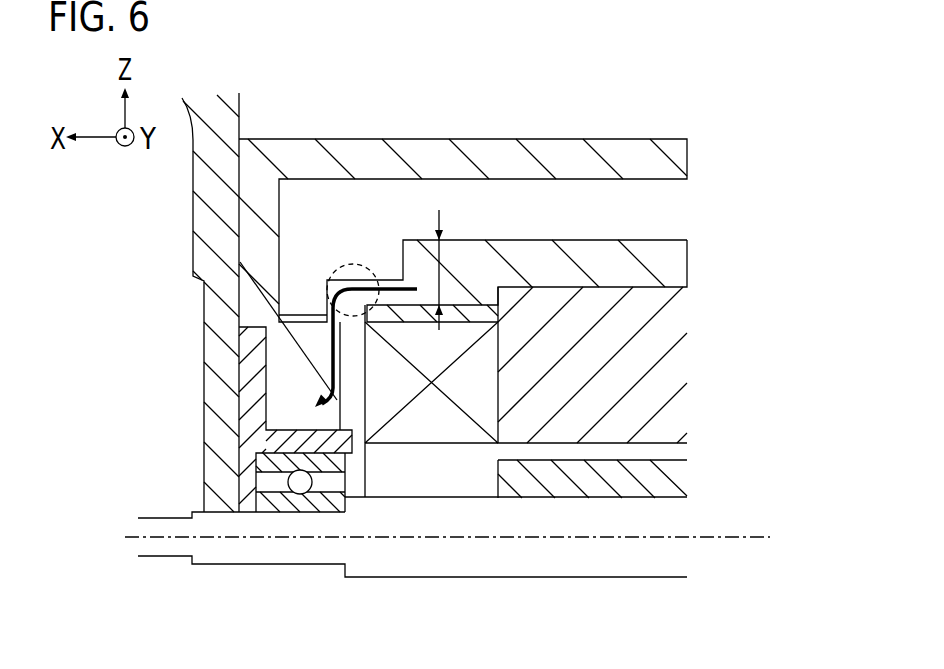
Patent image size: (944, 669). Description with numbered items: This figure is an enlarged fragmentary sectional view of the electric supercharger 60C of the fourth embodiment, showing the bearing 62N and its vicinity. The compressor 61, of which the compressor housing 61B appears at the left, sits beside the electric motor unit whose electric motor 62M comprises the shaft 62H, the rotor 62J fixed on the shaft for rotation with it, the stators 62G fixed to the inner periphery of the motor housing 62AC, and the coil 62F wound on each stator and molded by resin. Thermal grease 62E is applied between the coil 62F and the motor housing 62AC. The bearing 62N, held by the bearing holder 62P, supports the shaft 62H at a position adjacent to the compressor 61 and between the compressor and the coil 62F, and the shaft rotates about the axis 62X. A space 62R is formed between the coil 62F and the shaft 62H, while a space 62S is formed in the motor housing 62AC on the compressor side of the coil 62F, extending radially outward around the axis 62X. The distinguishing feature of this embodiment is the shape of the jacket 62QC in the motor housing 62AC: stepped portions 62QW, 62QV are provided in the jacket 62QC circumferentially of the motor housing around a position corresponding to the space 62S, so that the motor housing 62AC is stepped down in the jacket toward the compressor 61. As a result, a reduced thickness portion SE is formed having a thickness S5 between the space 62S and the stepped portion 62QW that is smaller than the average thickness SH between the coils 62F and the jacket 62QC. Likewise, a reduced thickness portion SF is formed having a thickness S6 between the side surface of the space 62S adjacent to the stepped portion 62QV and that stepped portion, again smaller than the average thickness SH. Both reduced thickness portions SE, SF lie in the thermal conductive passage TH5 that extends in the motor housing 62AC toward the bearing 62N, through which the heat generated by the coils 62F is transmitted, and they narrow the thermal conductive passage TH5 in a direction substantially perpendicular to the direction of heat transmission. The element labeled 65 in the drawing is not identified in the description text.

The compressor 61 is at (160, 358).
The compressor housing 61B is at (215, 200).
The motor housing 62AC is at (627, 155).
The jacket 62QC is at (561, 216).
The stepped portion 62QW is at (357, 279).
The stepped portion 62QV is at (300, 312).
The thermal grease 62E is at (472, 312).
The coil 62F is at (485, 348).
The stator 62G is at (638, 355).
The shaft 62H is at (569, 519).
The rotor 62J is at (618, 480).
The electric motor 62M is at (807, 312).
The bearing 62N is at (275, 502).
The bearing holder 62P is at (330, 443).
The space 62R is at (463, 469).
The space 62S is at (349, 376).
The axis 62X is at (97, 531).
The heat dissipating member 65 is at (682, 112).
The electric supercharger 60C is at (740, 200).
The thermal conductive passage TH5 is at (312, 378).
The thickness S5 is at (394, 280).
The thickness S6 is at (318, 280).
The reduced thickness portion SE is at (336, 280).
The reduced thickness portion SF is at (300, 293).
The average thickness SH is at (444, 272).